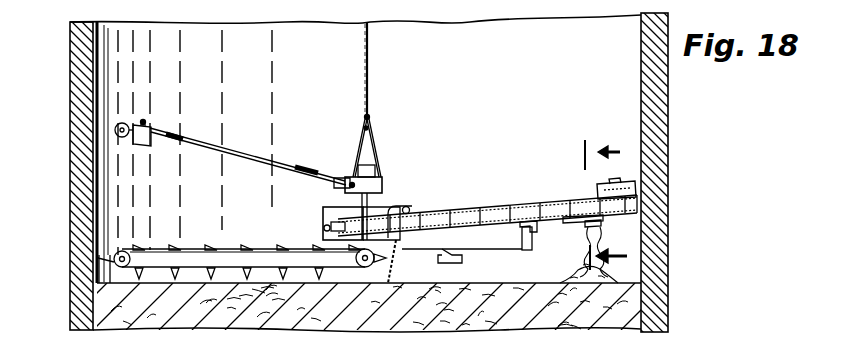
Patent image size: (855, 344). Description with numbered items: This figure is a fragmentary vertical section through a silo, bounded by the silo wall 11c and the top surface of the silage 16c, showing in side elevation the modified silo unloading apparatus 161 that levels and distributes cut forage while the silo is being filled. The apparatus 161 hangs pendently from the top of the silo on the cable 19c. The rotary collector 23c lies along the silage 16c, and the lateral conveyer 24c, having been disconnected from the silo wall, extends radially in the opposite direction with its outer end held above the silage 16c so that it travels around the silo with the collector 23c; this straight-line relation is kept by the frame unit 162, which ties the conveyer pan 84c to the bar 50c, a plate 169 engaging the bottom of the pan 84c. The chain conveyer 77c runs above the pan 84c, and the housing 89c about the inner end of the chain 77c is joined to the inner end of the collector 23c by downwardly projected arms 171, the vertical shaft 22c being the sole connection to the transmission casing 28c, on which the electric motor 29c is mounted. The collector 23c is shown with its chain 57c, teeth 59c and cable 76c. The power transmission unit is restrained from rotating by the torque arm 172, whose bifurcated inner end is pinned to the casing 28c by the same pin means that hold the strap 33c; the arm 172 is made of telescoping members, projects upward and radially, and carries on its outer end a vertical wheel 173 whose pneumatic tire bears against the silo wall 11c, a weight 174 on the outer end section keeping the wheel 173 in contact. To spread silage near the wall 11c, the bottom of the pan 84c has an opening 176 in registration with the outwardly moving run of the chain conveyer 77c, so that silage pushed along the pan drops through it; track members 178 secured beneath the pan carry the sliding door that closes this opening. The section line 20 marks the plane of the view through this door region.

The silo wall 11c is at (72, 100).
The silage 16c is at (100, 308).
The cable 19c is at (369, 60).
The vertical shaft 22c is at (340, 210).
The rotary collector 23c is at (213, 234).
The lateral conveyer 24c is at (569, 262).
The transmission casing 28c is at (352, 172).
The electric motor 29c is at (356, 170).
The strap 33c is at (375, 150).
The bar 50c is at (476, 250).
The conveyer chain 57c is at (155, 245).
The collector teeth 59c is at (168, 244).
The flexible cable 76c is at (391, 281).
The chain conveyer 77c is at (533, 200).
The conveyer pan 84c is at (541, 227).
The housing 89c is at (394, 206).
The silo unloading apparatus 161 is at (306, 161).
The frame unit 162 is at (515, 205).
The plate 169 is at (520, 243).
The downwardly projected arms 171 is at (410, 208).
The torque arm 172 is at (258, 161).
The vertical wheel 173 is at (128, 124).
The weight 174 is at (150, 130).
The opening 176 is at (588, 226).
The track members 178 is at (593, 221).
The section line 20- 20 is at (609, 196).